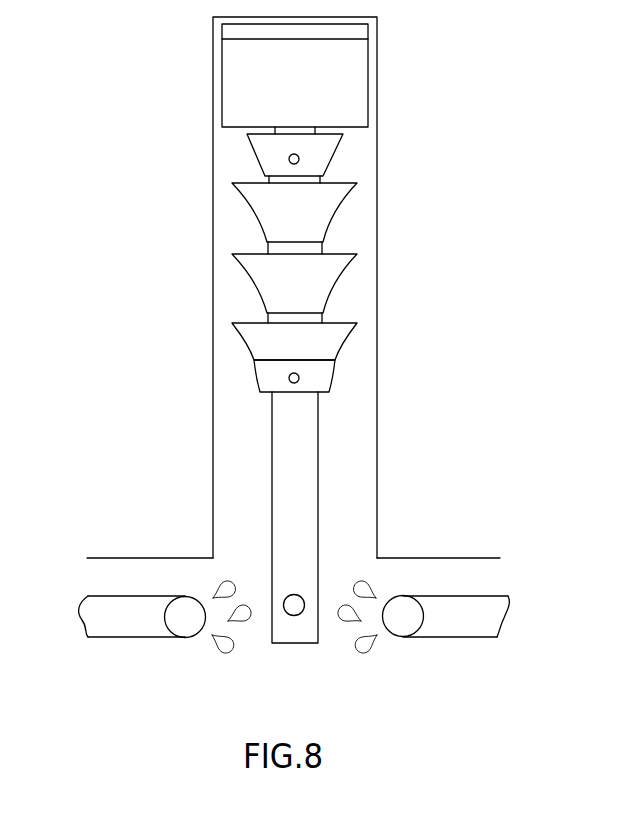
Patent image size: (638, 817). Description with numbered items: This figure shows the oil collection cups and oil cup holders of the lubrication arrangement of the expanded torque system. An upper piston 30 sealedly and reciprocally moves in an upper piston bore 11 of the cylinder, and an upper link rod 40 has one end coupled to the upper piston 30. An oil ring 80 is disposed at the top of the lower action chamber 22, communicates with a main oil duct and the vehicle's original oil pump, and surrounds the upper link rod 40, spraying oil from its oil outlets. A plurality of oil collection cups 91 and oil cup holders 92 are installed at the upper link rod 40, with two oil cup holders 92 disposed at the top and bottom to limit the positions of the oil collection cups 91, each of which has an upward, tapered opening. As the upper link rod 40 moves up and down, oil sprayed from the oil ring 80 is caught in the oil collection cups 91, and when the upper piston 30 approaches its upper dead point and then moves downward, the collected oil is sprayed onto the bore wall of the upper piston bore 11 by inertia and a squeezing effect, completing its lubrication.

The upper piston bore 11 is at (213, 402).
The lower action chamber 22 is at (450, 558).
The upper piston 30 is at (234, 66).
The upper link rod 40 is at (268, 442).
The oil ring 80 is at (128, 653).
The oil collection cup 91 is at (327, 206).
The oil cup holder 92 is at (327, 150).